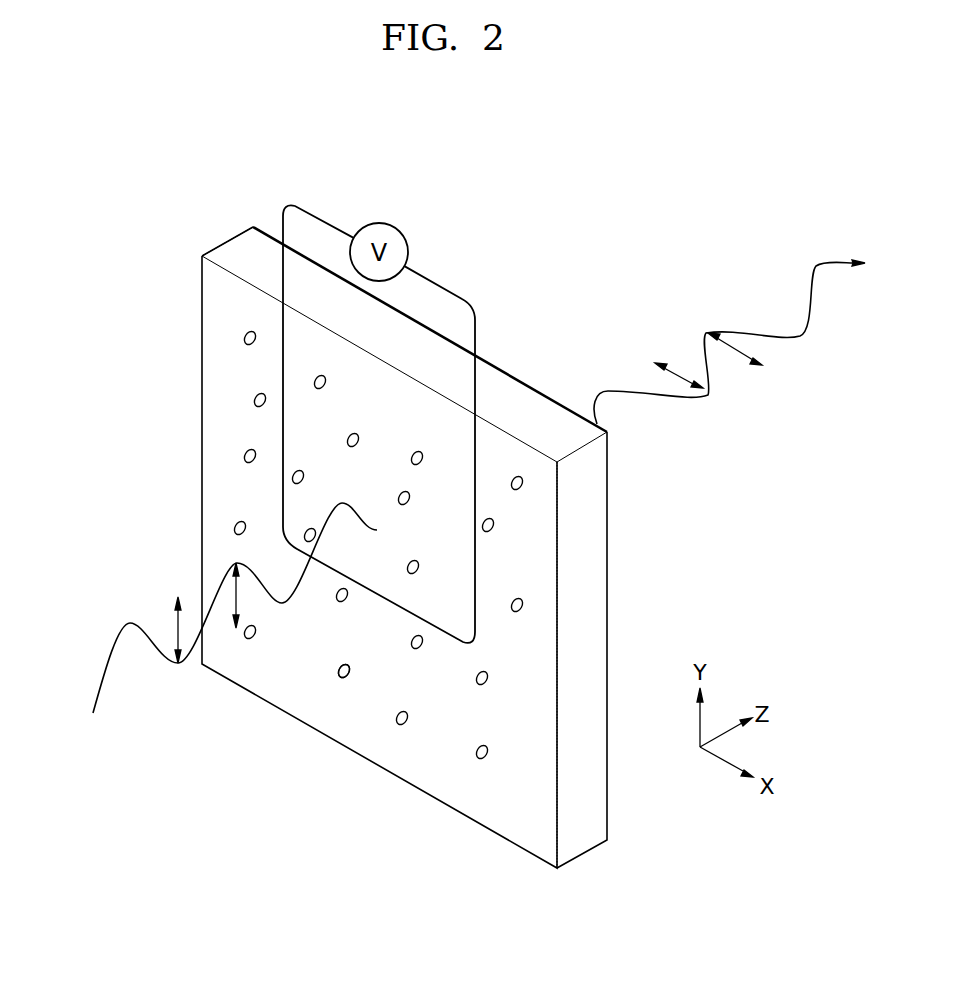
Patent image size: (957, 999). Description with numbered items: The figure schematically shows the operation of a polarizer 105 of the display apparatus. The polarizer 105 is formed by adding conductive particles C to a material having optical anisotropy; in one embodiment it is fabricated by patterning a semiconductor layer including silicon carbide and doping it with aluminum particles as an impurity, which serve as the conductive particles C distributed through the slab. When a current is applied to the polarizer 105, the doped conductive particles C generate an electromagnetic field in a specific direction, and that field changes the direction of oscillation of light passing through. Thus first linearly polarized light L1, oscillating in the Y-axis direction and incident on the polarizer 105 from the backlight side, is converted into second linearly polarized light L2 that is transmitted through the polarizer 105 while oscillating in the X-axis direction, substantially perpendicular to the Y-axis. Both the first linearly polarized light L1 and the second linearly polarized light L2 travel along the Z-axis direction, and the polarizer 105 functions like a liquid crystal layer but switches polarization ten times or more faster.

The polarizer 105 is at (240, 247).
The conductive particles C is at (339, 676).
The first linearly polarized light L1 is at (215, 608).
The second linearly polarized light L2 is at (729, 326).